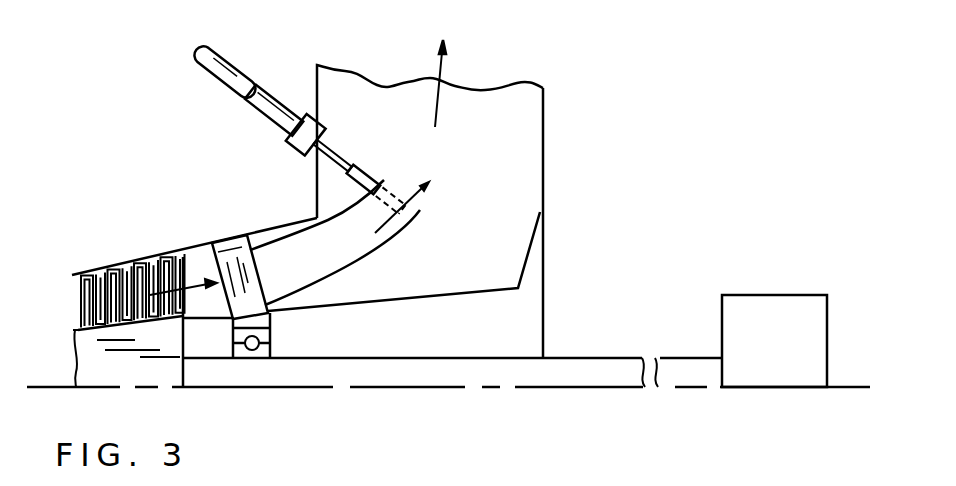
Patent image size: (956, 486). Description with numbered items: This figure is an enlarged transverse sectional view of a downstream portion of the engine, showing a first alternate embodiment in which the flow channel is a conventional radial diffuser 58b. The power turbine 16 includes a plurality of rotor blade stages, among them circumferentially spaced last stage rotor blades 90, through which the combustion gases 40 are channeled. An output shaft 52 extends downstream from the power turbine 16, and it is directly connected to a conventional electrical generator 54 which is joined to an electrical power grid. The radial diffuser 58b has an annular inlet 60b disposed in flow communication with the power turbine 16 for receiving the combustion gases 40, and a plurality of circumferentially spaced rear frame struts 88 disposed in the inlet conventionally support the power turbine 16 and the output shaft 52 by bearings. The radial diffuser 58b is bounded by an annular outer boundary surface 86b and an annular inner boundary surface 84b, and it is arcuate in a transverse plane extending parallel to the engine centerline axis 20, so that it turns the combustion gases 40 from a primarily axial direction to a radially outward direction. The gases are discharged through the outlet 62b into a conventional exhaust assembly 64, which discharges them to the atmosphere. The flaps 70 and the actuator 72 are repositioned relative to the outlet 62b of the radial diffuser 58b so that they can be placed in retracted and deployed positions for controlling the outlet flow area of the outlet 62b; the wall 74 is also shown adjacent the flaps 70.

The power turbine 16 is at (104, 262).
The last stage rotor blades 90 is at (172, 252).
The inlet of radial diffuser 60b is at (203, 249).
The rear frame struts 88 is at (257, 276).
The combustion gases 40 is at (192, 296).
The radial diffuser 58b is at (283, 257).
The outer boundary surface 86b is at (320, 229).
The inner boundary surface 84b is at (336, 278).
The outlet of radial diffuser 62b is at (419, 226).
The chamber wall 74 is at (316, 89).
The exhaust assembly 64 is at (545, 152).
The actuator 72 is at (258, 105).
The flaps 70 is at (375, 181).
The output shaft 52 is at (605, 358).
The engine centerline axis 20 is at (593, 389).
The electrical generator 54 is at (793, 363).